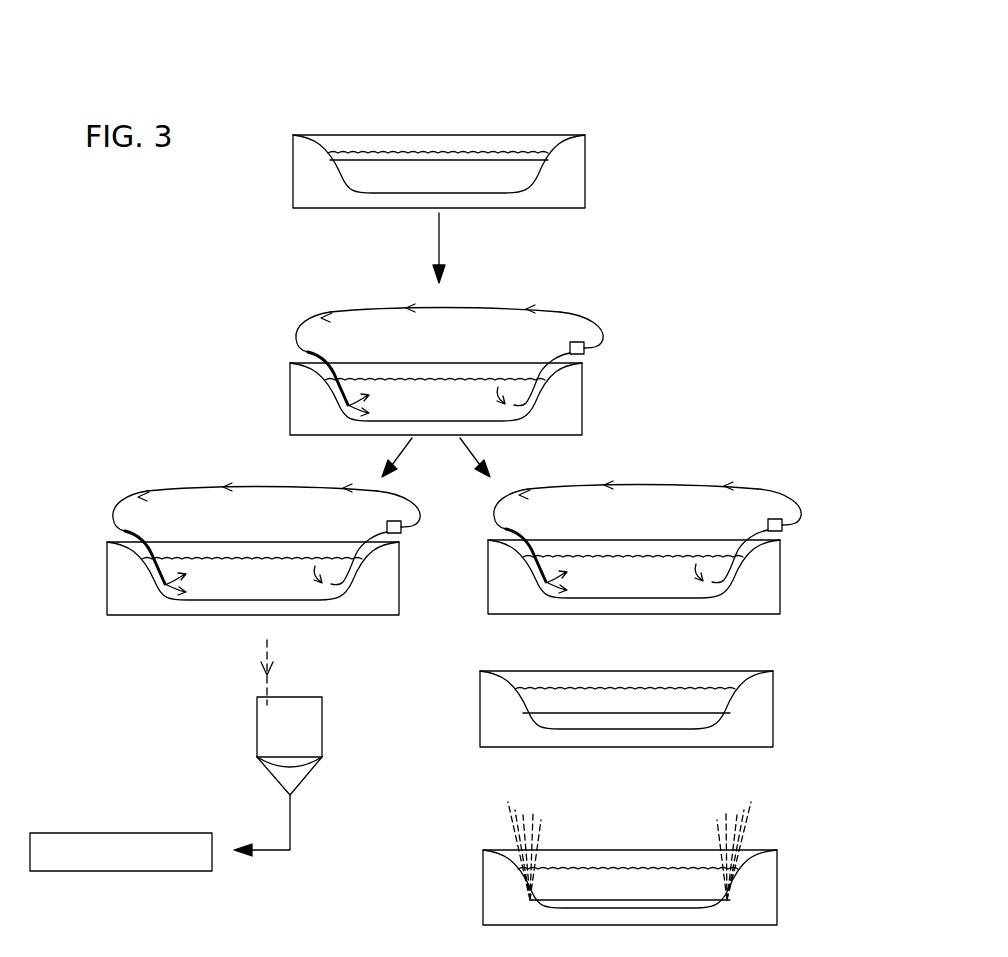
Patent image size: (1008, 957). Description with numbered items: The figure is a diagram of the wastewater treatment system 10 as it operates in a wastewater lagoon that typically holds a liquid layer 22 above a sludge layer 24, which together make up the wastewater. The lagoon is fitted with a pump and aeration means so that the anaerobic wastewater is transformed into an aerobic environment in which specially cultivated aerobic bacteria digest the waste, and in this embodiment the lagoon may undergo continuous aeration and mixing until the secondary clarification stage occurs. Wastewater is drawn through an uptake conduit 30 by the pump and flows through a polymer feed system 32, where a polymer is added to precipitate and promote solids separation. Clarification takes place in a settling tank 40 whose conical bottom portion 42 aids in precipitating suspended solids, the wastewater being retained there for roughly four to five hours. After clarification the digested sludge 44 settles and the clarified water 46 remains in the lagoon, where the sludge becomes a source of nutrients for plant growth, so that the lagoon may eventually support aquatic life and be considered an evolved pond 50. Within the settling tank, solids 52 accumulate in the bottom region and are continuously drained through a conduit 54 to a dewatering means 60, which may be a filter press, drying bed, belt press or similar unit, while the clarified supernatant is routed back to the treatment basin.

The wastewater treatment system 10 is at (626, 75).
The liquid layer 22 is at (395, 121).
The sludge layer 24 is at (375, 193).
The uptake conduit 30 is at (722, 584).
The polymer feed system 32 is at (711, 460).
The settling tank 40 is at (257, 718).
The conical bottom portion 42 is at (268, 777).
The digested sludge 44 is at (626, 721).
The clarified water 46 is at (580, 680).
The evolved pond 50 is at (629, 838).
The solids 52 is at (293, 775).
The conduit 54 is at (270, 852).
The dewatering means 60 is at (115, 871).